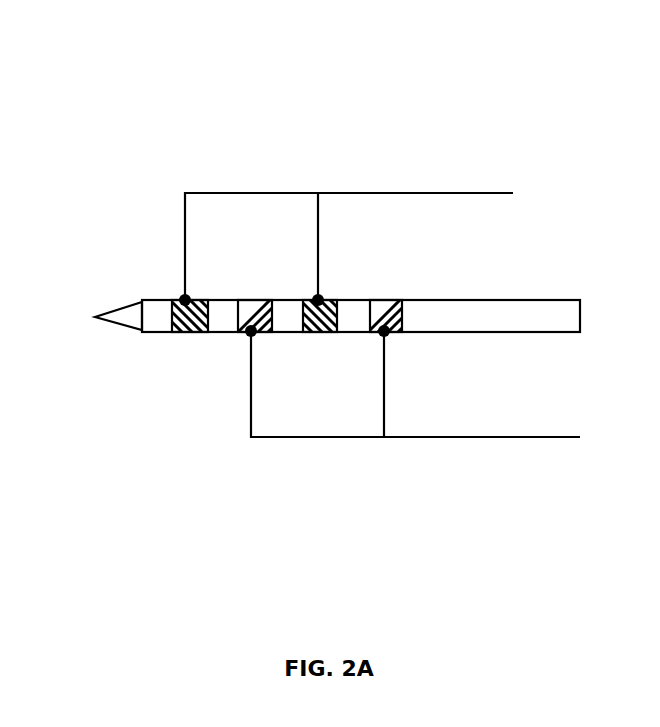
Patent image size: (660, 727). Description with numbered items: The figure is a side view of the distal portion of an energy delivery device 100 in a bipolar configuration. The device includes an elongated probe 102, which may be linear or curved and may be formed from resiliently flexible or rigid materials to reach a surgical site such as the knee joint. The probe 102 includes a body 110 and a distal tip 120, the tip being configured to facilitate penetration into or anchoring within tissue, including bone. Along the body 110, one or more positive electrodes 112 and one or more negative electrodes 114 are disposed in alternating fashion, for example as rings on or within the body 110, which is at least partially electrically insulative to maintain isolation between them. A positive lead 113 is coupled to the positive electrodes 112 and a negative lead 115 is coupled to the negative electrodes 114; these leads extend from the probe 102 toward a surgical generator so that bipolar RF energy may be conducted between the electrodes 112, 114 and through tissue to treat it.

The energy delivery device 100 is at (276, 141).
The probe 102 is at (140, 398).
The body 110 is at (517, 311).
The positive electrodes 112 is at (185, 332).
The positive lead 113 is at (470, 192).
The negative electrodes 114 is at (255, 300).
The negative lead 115 is at (496, 438).
The distal tip 120 is at (103, 324).